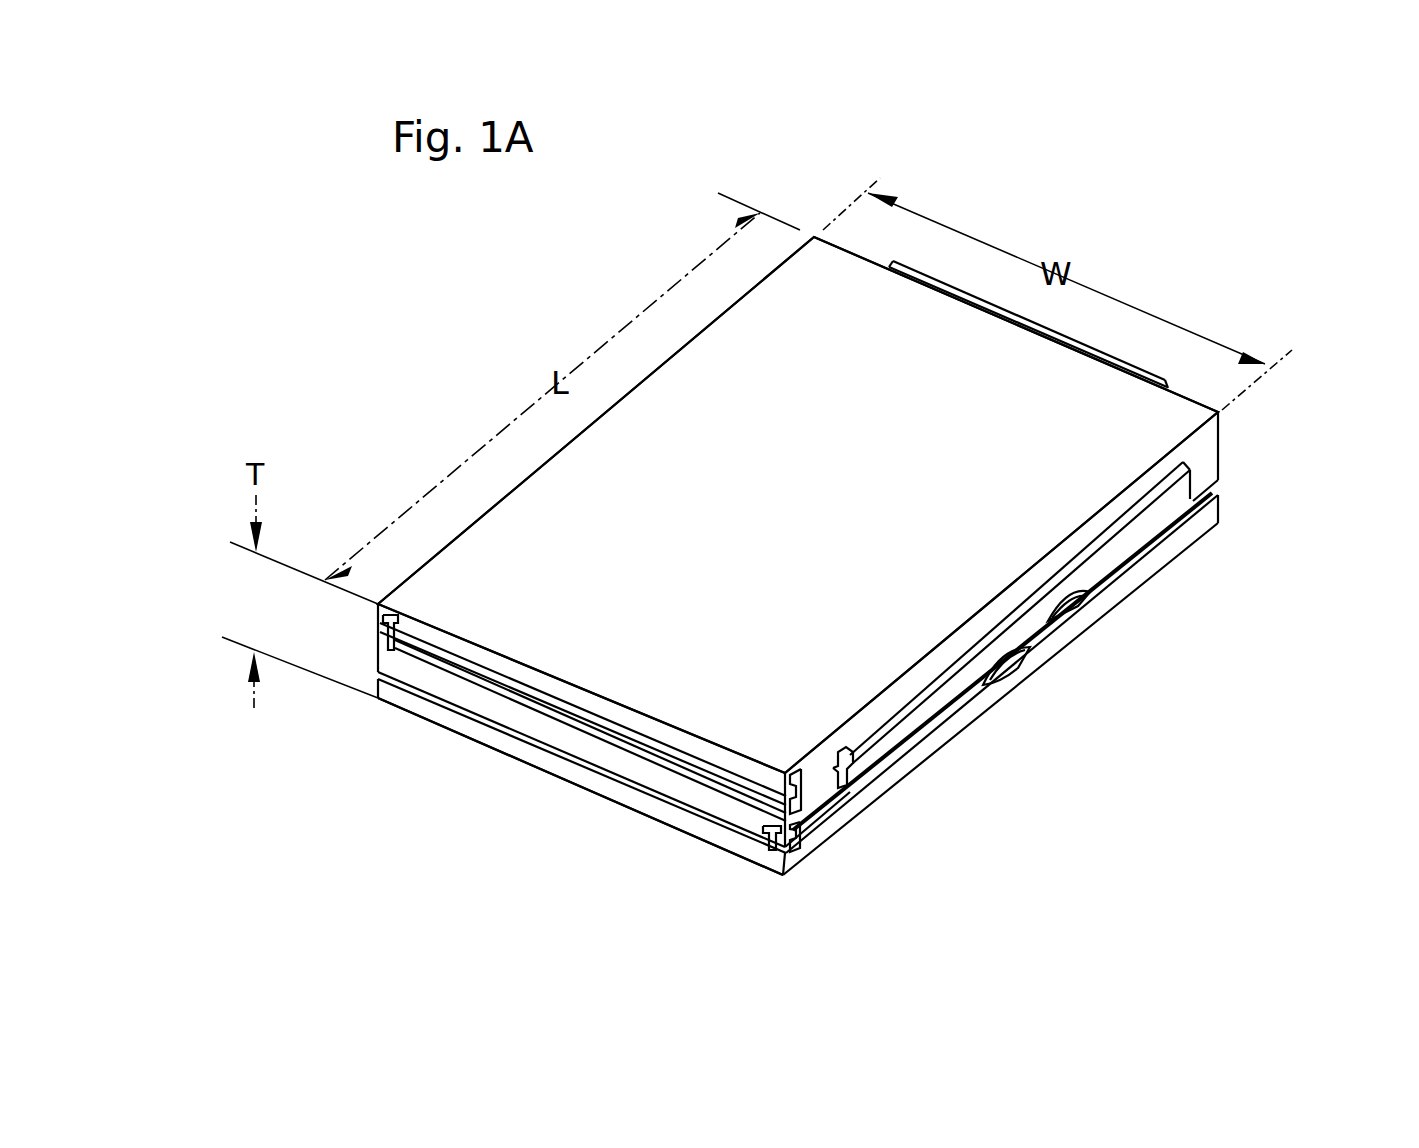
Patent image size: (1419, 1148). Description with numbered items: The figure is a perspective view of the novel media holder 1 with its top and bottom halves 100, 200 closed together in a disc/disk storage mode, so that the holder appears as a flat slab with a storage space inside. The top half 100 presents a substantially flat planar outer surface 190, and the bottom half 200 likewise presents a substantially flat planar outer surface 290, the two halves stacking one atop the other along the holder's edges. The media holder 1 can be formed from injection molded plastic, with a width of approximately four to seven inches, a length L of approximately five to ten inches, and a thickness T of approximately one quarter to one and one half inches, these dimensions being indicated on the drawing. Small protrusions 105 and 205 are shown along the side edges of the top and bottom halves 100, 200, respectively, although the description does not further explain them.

The media holder 1 is at (346, 375).
The top half 100 is at (884, 554).
The protrusion on upper body rail 105 is at (1004, 555).
The outer surface 190 is at (744, 516).
The bottom half 200 is at (798, 685).
The protrusion on lower body 205 is at (1073, 714).
The outer surface 290 is at (605, 816).